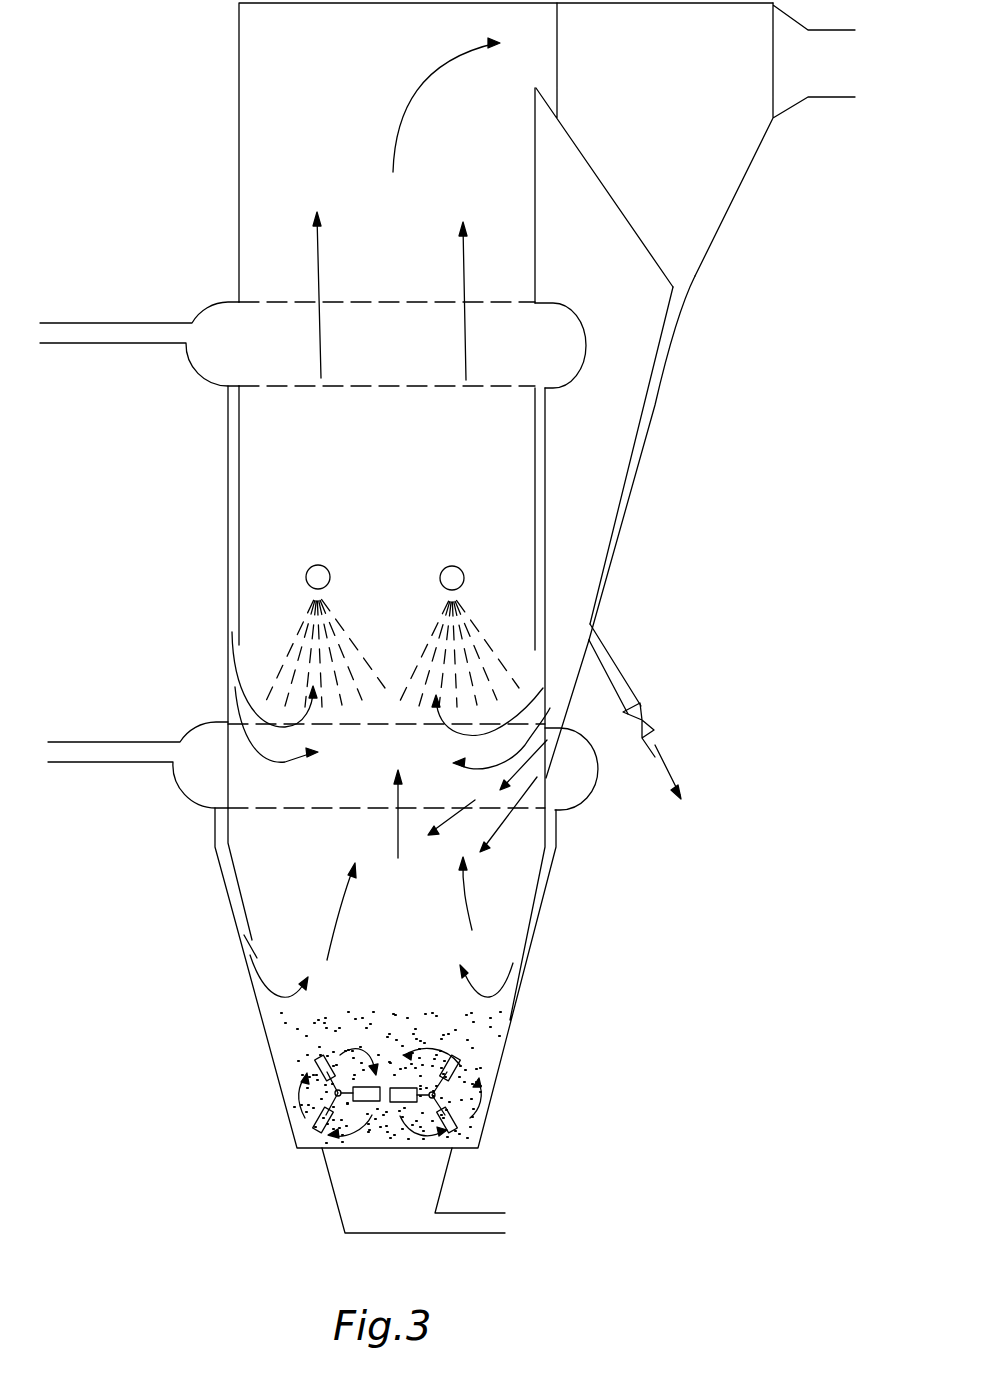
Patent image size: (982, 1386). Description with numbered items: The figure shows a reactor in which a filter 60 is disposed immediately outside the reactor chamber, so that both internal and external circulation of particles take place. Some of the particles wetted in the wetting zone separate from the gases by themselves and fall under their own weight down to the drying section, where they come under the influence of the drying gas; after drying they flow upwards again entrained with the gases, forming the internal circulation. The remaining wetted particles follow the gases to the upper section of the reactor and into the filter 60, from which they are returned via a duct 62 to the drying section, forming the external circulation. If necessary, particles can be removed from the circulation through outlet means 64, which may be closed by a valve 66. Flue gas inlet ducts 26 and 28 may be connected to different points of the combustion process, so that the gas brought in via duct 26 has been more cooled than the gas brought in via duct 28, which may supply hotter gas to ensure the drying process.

The flue gas inlet duct 26 is at (115, 335).
The flue gas inlet duct 28 is at (133, 752).
The filter 60 is at (672, 112).
The duct 62 is at (653, 395).
The outlet means 64 is at (605, 657).
The valve 66 is at (645, 720).